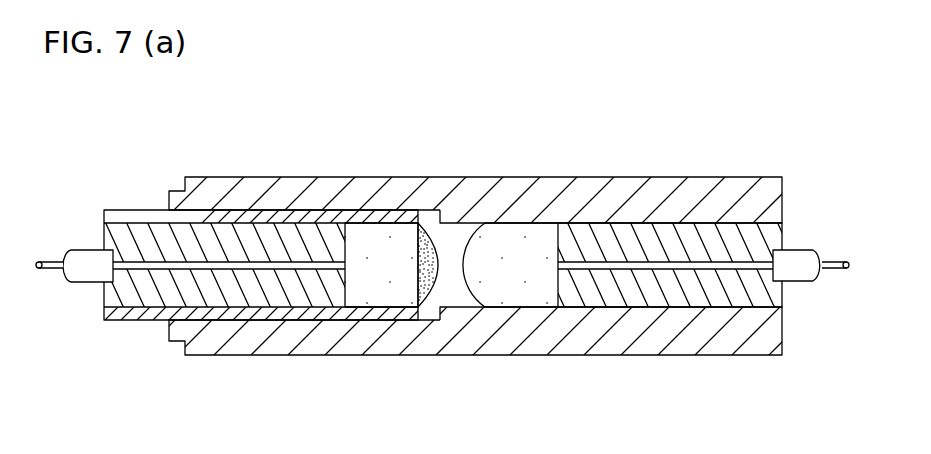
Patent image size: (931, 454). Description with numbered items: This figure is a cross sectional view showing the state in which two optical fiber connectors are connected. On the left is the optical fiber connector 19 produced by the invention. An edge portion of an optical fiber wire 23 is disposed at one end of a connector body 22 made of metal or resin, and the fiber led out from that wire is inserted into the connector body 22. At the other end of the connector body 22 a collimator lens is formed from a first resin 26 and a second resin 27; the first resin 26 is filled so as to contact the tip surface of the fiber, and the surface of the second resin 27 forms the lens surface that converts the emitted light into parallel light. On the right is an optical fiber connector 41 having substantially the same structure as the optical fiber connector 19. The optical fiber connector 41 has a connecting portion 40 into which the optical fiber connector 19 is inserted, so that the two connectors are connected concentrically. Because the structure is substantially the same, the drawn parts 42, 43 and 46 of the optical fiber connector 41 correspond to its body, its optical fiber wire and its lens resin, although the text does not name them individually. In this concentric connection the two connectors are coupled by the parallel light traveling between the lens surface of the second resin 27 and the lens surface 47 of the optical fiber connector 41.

The optical fiber connector 19 is at (429, 258).
The connector body 22 is at (152, 215).
The optical fiber wire 23 is at (80, 283).
The first resin 26 is at (356, 300).
The second resin 27 is at (430, 290).
The connecting portion 40 is at (372, 188).
The optical fiber connector 41 is at (468, 266).
The housing body 42 is at (667, 193).
The optical fiber connector 43 is at (800, 283).
The lens holder 46 is at (541, 232).
The lens surface 47 is at (472, 295).